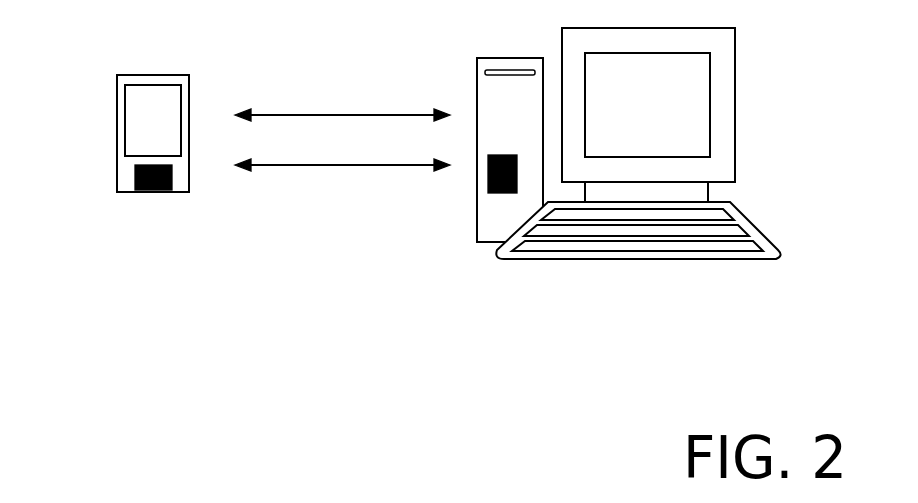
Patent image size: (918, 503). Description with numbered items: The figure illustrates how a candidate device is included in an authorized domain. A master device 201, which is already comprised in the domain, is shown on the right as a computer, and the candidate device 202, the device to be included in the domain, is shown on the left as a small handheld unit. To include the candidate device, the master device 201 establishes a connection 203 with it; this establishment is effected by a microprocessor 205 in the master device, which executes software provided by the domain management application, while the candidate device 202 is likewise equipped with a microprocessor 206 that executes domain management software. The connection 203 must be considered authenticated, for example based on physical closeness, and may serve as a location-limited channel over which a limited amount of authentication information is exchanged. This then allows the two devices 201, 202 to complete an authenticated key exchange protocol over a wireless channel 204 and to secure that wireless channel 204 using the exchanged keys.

The master device 201 is at (733, 245).
The candidate device 202 is at (118, 188).
The connection 203 is at (335, 113).
The wireless channel 204 is at (337, 167).
The microprocessor 205 is at (503, 192).
The microprocessor 206 is at (155, 190).